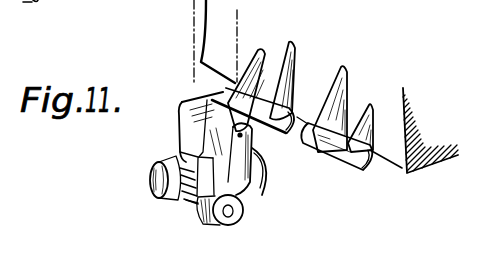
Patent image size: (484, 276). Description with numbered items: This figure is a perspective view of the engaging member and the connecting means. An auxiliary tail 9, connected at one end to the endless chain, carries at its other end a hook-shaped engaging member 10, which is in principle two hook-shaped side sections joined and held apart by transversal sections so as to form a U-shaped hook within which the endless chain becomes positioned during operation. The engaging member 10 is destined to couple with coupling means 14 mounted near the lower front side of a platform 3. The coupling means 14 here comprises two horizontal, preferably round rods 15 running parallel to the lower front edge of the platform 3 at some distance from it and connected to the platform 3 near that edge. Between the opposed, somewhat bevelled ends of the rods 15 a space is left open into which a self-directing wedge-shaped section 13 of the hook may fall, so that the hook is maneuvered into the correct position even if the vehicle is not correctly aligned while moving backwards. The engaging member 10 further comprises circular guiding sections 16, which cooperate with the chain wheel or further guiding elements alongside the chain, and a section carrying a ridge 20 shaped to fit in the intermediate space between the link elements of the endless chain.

The platform 3 is at (399, 158).
The auxiliary tail 9 is at (190, 3).
The hook-shaped engaging member 10 is at (184, 211).
The wedge-shaped section 13 is at (252, 152).
The coupling means 14 is at (353, 61).
The rods 15 is at (222, 86).
The circular guiding sections 16 is at (155, 165).
The ridge 20 is at (180, 142).